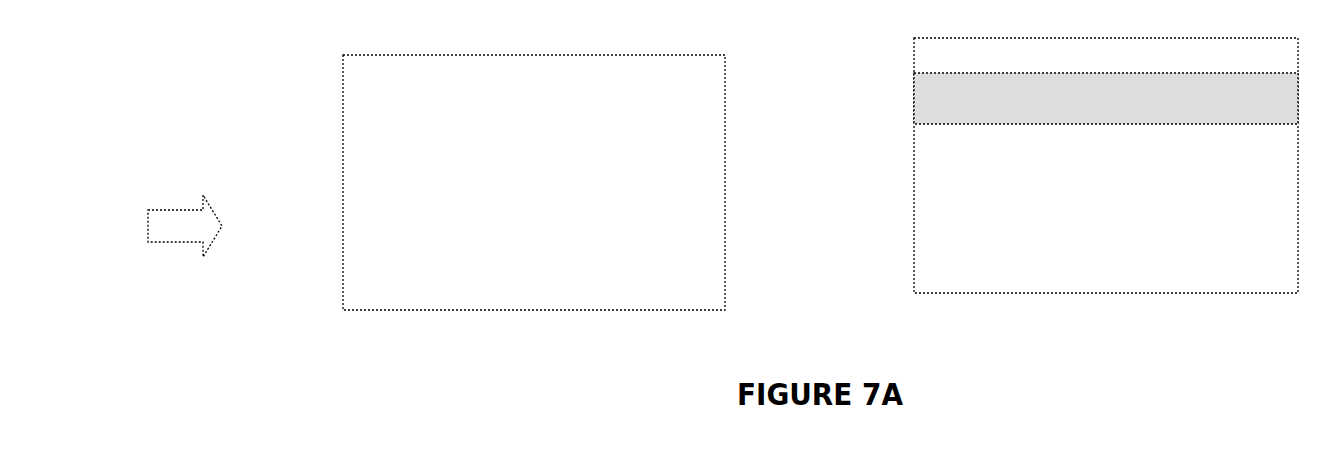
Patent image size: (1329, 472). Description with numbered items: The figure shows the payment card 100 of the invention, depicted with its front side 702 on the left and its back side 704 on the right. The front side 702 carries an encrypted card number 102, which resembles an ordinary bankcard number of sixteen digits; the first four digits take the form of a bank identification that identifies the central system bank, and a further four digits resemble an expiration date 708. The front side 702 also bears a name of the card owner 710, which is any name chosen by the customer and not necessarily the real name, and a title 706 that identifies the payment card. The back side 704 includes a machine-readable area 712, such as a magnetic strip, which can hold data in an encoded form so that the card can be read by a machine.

The payment card 100 is at (179, 213).
The encrypted card number 102 is at (353, 212).
The front side 702 is at (341, 157).
The back side 704 is at (910, 192).
The title 706 is at (383, 97).
The expiration date 708 is at (703, 241).
The name of the card owner 710 is at (353, 287).
The machine-readable area 712 is at (1092, 130).